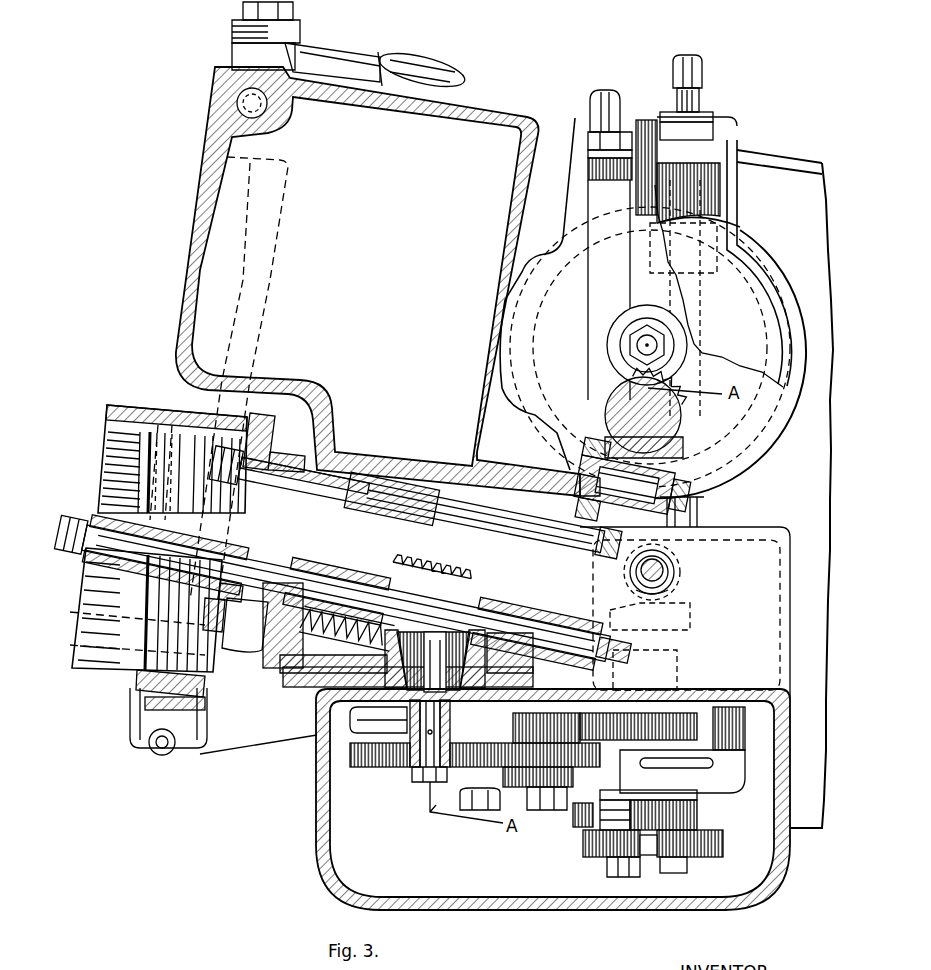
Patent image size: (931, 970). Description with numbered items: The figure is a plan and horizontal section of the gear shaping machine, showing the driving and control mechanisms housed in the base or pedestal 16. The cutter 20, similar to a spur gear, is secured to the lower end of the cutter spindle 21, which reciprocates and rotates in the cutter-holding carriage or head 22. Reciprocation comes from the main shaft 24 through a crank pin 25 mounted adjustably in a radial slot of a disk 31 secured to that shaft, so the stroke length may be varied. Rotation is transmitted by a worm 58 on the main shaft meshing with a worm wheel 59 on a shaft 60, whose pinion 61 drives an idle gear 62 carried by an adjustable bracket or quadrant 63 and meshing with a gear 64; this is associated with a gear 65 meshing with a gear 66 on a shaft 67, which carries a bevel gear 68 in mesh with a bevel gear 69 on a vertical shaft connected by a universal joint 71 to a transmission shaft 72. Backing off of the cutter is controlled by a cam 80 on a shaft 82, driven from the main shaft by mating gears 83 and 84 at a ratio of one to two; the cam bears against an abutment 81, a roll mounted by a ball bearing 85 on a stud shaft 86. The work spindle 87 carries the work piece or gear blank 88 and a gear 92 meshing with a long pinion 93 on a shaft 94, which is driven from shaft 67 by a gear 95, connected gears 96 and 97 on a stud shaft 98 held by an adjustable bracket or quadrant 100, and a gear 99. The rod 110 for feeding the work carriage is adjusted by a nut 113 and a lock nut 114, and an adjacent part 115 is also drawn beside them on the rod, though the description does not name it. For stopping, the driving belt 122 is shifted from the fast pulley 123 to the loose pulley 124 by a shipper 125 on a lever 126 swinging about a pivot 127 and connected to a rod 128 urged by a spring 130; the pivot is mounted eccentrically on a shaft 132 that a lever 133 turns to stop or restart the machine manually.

The base or pedestal 16 is at (268, 736).
The cutter 20 is at (625, 392).
The cutter spindle 21 is at (612, 413).
The cutter-holding carriage or head 22 is at (675, 450).
The main shaft 24 is at (345, 582).
The crank pin 25 is at (628, 652).
The disk 31 is at (570, 603).
The worm 58 is at (417, 573).
The worm wheel 59 is at (480, 592).
The shaft 60 is at (433, 707).
The pinion 61 is at (410, 767).
The idle gear 62 is at (362, 770).
The adjustable bracket or quadrant 63 is at (370, 722).
The gear 64 is at (565, 770).
The gear 65 is at (515, 727).
The gear 66 is at (668, 740).
The shaft 67 is at (648, 860).
The bevel gear 68 is at (694, 614).
The bevel gear 69 is at (688, 575).
The universal joint 71 is at (670, 597).
The transmission shaft 72 is at (672, 556).
The cam 80 is at (578, 510).
The abutment 81 is at (608, 440).
The shaft 82 is at (408, 508).
The gear 83 is at (237, 603).
The gear 84 is at (272, 434).
The ball bearing 85 is at (588, 460).
The stud shaft 86 is at (578, 468).
The work spindle 87 is at (640, 348).
The work piece or gear blank 88 is at (608, 340).
The gear 92 is at (750, 278).
The pinion 93 is at (718, 195).
The shaft 94 is at (695, 103).
The gear 95 is at (695, 817).
The gear 96 is at (585, 828).
The gear 97 is at (592, 852).
The stud shaft 98 is at (622, 870).
The gear 99 is at (723, 842).
The adjustable bracket or quadrant 100 is at (473, 777).
The rod 110 is at (613, 112).
The nut 113 is at (600, 152).
The lock nut 114 is at (592, 137).
The knurled ring 115 is at (603, 162).
The driving belt 122 is at (187, 712).
The fast pulley 123 is at (208, 678).
The loose pulley 124 is at (90, 675).
The shipper 125 is at (140, 718).
The lever 126 is at (158, 742).
The pivot 127 is at (224, 656).
The rod 128 is at (296, 672).
The spring 130 is at (340, 642).
The shaft 132 is at (252, 297).
The lever 133 is at (417, 72).